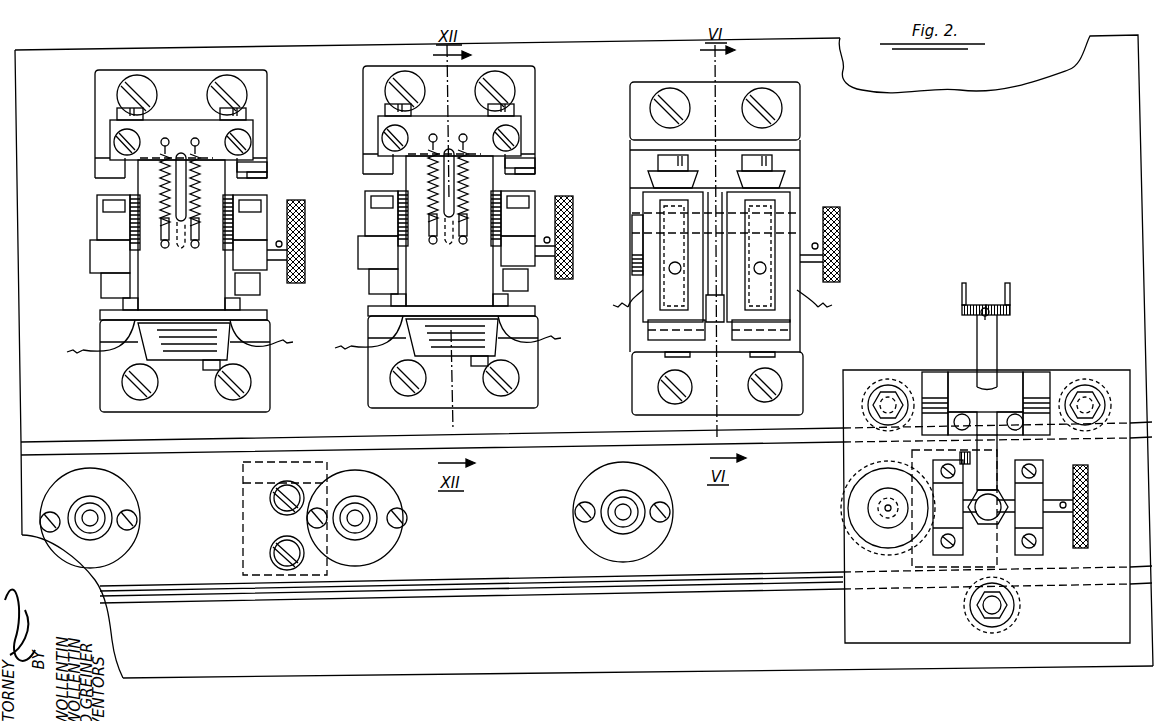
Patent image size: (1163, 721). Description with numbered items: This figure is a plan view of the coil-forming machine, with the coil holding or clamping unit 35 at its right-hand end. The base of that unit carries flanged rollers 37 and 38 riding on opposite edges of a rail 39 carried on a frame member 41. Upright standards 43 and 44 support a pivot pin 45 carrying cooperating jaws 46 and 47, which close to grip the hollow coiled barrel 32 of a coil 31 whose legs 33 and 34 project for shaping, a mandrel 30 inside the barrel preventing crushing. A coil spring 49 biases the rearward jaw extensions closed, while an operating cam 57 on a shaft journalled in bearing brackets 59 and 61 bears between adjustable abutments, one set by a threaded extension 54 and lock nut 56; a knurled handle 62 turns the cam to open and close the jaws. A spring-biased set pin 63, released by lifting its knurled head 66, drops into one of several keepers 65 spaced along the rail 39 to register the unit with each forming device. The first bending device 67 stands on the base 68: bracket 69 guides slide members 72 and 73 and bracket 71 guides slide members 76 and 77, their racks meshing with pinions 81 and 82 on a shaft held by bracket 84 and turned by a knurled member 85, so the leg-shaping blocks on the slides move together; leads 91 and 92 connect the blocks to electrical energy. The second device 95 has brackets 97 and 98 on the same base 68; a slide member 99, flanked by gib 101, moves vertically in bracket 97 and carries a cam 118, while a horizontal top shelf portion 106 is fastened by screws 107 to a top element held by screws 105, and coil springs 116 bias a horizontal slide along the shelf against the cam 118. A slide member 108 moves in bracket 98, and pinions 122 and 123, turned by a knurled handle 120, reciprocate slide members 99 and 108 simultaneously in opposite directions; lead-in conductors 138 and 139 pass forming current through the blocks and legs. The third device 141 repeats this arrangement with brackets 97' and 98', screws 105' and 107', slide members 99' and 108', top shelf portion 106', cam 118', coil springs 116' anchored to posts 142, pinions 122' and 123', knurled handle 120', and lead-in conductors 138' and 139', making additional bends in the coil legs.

The third bending device 141 is at (191, 232).
The screws 105' is at (182, 86).
The bracket 97' is at (204, 123).
The cam 118' is at (180, 161).
The screws 107' is at (180, 133).
The slide member 99' is at (270, 160).
The coil springs 116' is at (224, 193).
The top shelf portion 106' is at (133, 235).
The pinion 123' is at (89, 246).
The pinion 122' is at (245, 245).
The knurled handle 120' is at (309, 241).
The posts 142 is at (185, 257).
The slide member 108' is at (153, 309).
The lead-in conductor 139' is at (270, 318).
The lead-in conductor 138' is at (87, 350).
The bracket 98' is at (205, 366).
The second bending device 95 is at (464, 229).
The bracket 97 is at (465, 112).
The screws 105 is at (450, 93).
The screws 107 is at (450, 122).
The coil springs 116 is at (405, 189).
The cam 118 is at (468, 209).
The slide member 99 is at (538, 141).
The gib 101 is at (547, 159).
The top shelf portion 106 is at (490, 231).
The pinion 123 is at (368, 242).
The pinion 122 is at (513, 241).
The knurled handle 120 is at (571, 237).
The slide member 108 is at (428, 310).
The lead-in conductor 138 is at (365, 349).
The lead-in conductor 139 is at (539, 324).
The bracket 98 is at (469, 362).
The base 68 is at (793, 40).
The first bending device 67 is at (803, 151).
The bracket 69 is at (790, 102).
The slide member 73 is at (648, 180).
The slide member 72 is at (778, 180).
The pinion 82 is at (643, 234).
The pinion 81 is at (775, 204).
The bracket 84 is at (635, 262).
The knurled member 85 is at (840, 228).
The lead 92 is at (625, 300).
The lead 91 is at (822, 300).
The slide member 76 is at (790, 332).
The slide member 77 is at (650, 340).
The bracket 71 is at (795, 404).
The coil holding or clamping unit 35 is at (842, 609).
The flanged roller 37 is at (874, 380).
The upright standard 43 is at (932, 372).
The upright standard 44 is at (1040, 372).
The jaw 47 is at (1005, 432).
The pivot pin 45 is at (965, 372).
The jaw 46 is at (992, 358).
The mandrel 30 is at (962, 312).
The coil 31 is at (1010, 308).
The leg 33 is at (962, 284).
The leg 34 is at (1010, 284).
The hollow coiled barrel 32 is at (983, 306).
The coil spring 49 is at (912, 455).
The set pin 63 is at (848, 490).
The knurled head 66 is at (880, 524).
The lock nut 56 is at (968, 520).
The bearing bracket 61 is at (1043, 545).
The threaded extension 54 is at (1005, 530).
The operating cam 57 is at (1008, 498).
The knurled handle 62 is at (1088, 506).
The frame member 41 is at (912, 568).
The bearing bracket 59 is at (948, 556).
The flanged roller 38 is at (1020, 618).
The keepers 65 is at (100, 522).
The rail 39 is at (506, 578).